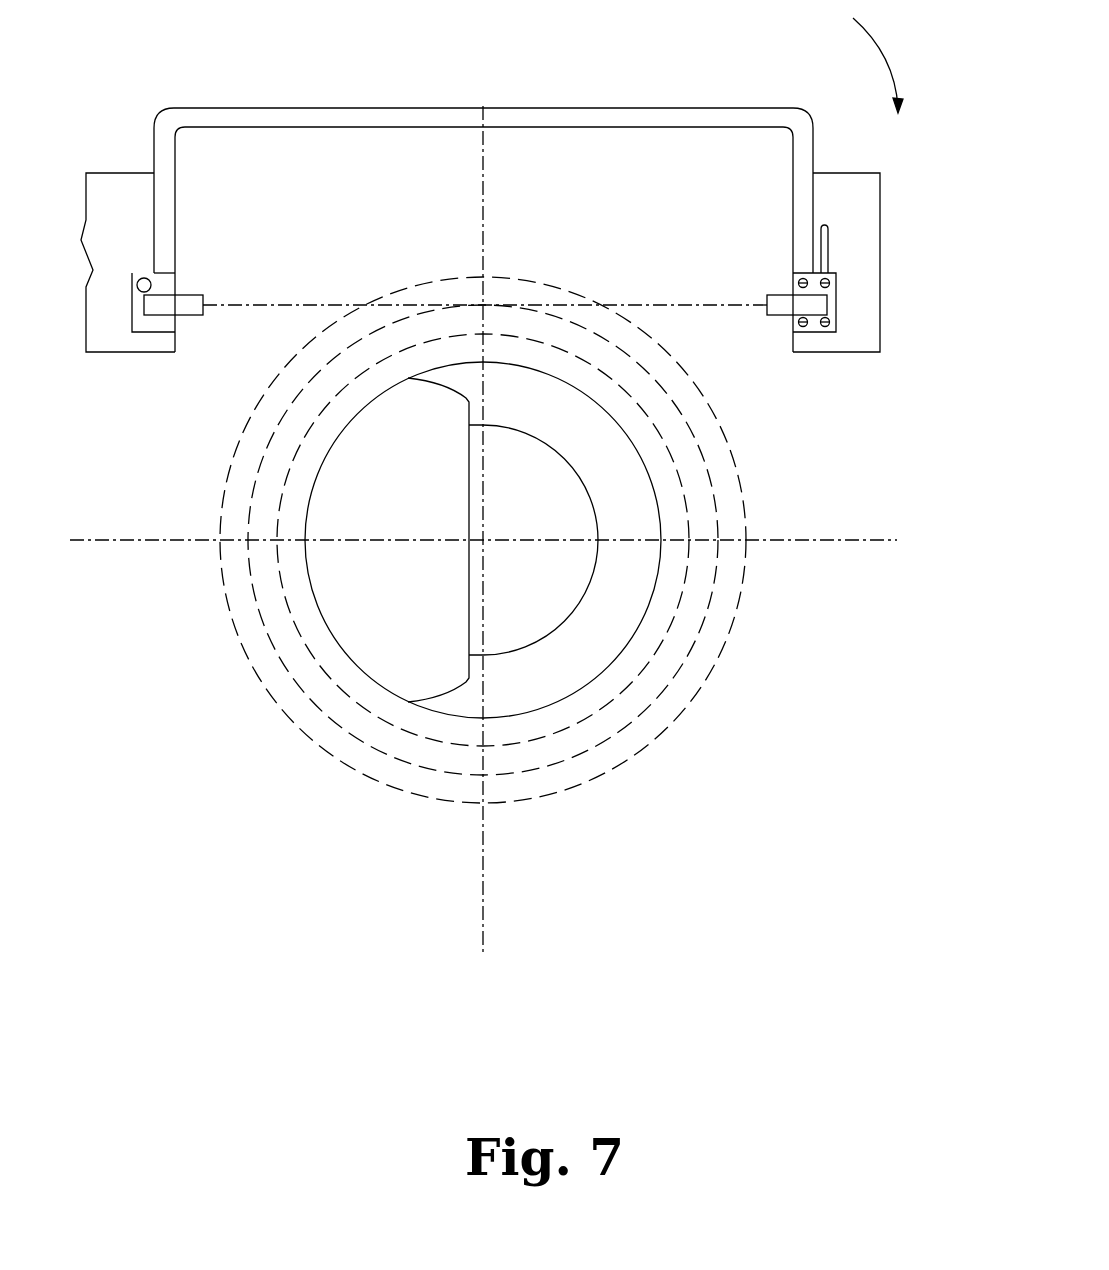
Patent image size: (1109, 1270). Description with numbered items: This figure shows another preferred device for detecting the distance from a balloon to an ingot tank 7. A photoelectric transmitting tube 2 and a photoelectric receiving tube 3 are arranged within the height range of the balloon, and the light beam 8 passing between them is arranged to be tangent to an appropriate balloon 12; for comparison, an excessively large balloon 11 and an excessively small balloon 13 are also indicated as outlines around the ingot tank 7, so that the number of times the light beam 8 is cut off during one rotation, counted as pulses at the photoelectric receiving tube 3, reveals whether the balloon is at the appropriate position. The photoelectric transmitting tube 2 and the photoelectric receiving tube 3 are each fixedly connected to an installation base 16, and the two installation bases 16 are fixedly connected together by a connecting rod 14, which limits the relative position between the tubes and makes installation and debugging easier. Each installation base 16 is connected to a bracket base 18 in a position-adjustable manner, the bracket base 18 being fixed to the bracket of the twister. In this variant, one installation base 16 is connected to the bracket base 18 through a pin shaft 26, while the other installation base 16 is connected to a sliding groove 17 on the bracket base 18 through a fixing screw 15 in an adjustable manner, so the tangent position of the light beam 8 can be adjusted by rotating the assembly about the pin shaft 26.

The photoelectric transmitting tube 2 is at (773, 297).
The photoelectric receiving tube 3 is at (182, 307).
The ingot tank 7 is at (625, 603).
The light beam 8 is at (658, 303).
The excessively large balloon 11 is at (723, 430).
The appropriate balloon 12 is at (710, 477).
The excessively small balloon 13 is at (690, 525).
The connecting rod 14 is at (563, 122).
The fixing screw 15 is at (828, 322).
The installation base 16 is at (833, 312).
The sliding groove 17 is at (823, 253).
The bracket base 18 is at (823, 195).
The pin shaft 26 is at (144, 285).